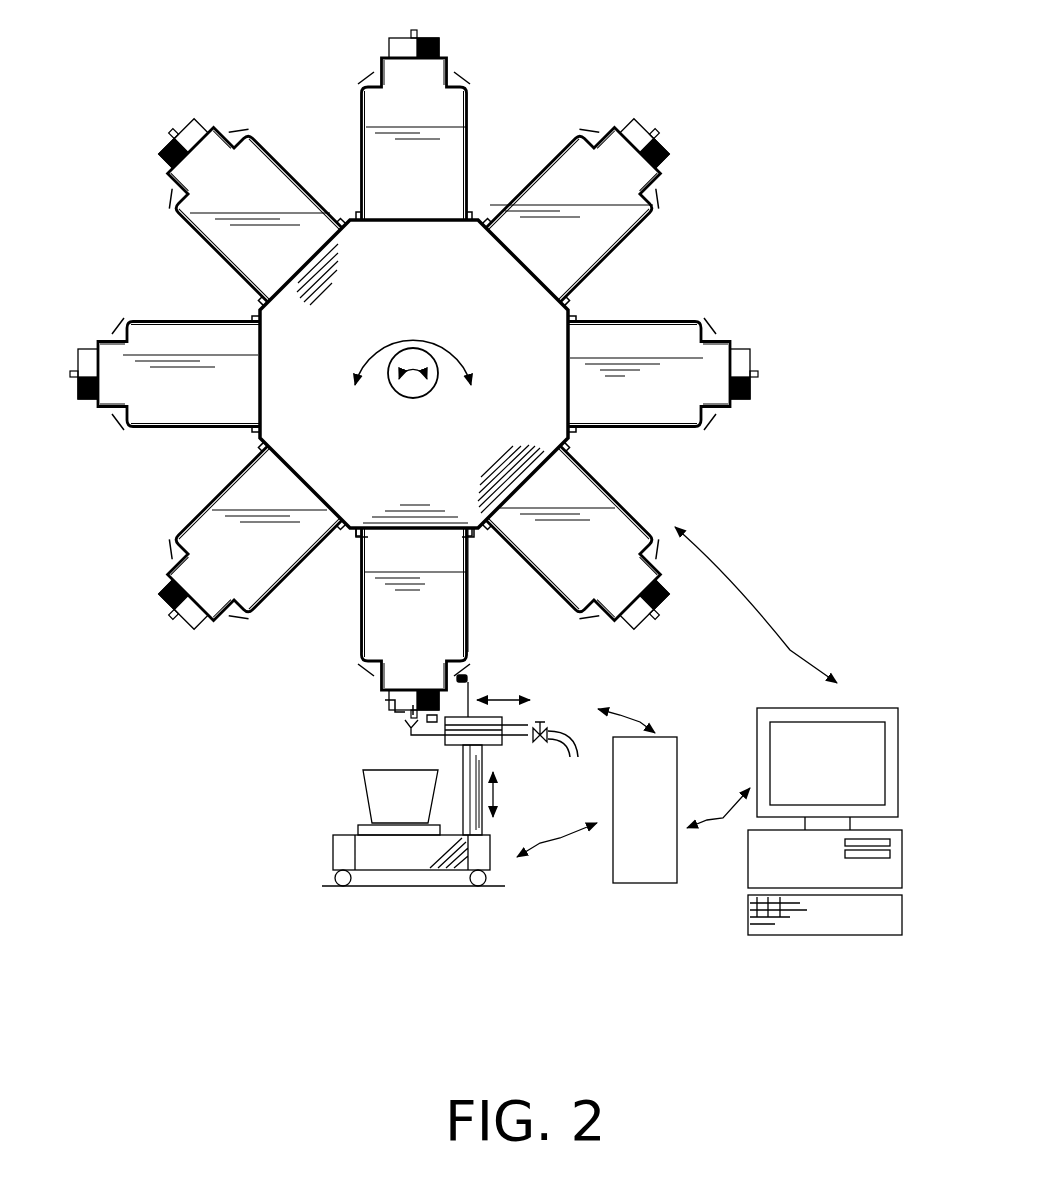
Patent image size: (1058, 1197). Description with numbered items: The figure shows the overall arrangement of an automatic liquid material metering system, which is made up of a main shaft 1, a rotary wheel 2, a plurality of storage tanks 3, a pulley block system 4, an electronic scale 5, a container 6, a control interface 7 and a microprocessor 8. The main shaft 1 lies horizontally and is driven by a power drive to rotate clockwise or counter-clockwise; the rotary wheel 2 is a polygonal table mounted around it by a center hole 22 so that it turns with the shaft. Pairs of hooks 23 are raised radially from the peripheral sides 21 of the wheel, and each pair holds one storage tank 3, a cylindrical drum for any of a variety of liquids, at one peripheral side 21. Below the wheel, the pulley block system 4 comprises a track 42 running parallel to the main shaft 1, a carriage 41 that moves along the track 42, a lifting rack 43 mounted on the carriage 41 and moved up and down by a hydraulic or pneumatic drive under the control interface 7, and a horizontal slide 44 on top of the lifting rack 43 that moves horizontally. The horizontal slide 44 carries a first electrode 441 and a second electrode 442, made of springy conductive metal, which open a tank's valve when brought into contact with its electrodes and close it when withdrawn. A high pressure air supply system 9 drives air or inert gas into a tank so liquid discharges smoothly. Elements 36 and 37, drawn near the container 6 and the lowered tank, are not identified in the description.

The main shaft 1 is at (422, 378).
The rotary wheel 2 is at (363, 262).
The storage tank 3 is at (603, 508).
The pulley block system 4 is at (408, 805).
The electronic scale 5 is at (358, 827).
The container 6 is at (371, 753).
The control interface 7 is at (652, 823).
The microprocessor 8 is at (823, 878).
The high pressure air supply system 9 is at (548, 732).
The peripheral side 21 is at (398, 534).
The center hole 22 is at (423, 367).
The hook 23 is at (470, 598).
The funnel 36 is at (372, 786).
The outlet 37 is at (377, 670).
The carriage 41 is at (417, 862).
The track 42 is at (345, 886).
The lifting rack 43 is at (482, 795).
The horizontal slide 44 is at (519, 727).
The first electrode 441 is at (477, 737).
The second electrode 442 is at (470, 677).